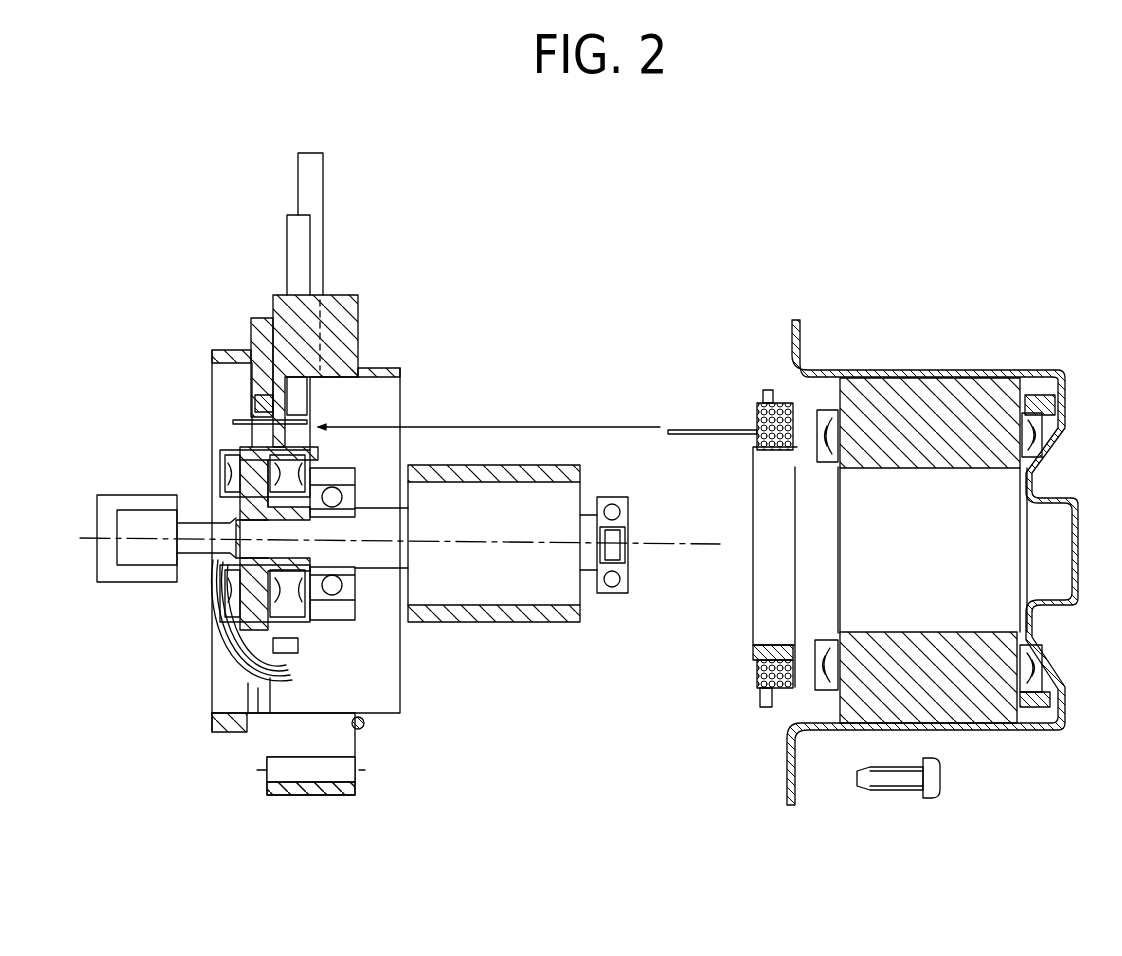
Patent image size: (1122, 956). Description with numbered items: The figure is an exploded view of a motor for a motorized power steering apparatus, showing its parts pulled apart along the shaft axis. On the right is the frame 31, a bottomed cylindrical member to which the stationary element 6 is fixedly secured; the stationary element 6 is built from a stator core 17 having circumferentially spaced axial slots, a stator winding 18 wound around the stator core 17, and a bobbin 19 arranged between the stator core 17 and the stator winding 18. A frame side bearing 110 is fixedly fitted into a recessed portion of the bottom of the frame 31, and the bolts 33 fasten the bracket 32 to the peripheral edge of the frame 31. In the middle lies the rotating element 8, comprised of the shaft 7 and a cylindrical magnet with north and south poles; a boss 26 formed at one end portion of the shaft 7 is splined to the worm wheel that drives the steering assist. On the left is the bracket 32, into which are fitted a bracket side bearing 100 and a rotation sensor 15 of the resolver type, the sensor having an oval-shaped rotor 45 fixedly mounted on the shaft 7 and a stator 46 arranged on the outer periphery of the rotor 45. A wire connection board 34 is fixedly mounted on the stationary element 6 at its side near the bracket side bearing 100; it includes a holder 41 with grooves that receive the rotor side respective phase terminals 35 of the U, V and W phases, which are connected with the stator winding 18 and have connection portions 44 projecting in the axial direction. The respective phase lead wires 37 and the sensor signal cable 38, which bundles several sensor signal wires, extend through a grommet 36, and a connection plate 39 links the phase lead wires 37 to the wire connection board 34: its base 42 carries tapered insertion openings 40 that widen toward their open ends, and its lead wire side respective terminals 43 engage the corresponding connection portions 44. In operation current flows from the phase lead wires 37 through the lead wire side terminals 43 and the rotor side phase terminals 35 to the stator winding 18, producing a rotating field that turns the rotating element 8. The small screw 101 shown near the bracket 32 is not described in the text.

The stationary element 6 is at (962, 698).
The shaft 7 is at (555, 500).
The rotating element 8 is at (518, 472).
The rotation sensor 15 is at (225, 480).
The stator core 17 is at (900, 410).
The stator winding 18 is at (1042, 437).
The bobbin 19 is at (1040, 403).
The boss 26 is at (130, 572).
The frame 31 is at (970, 372).
The bracket 32 is at (262, 317).
The bolts 33 is at (893, 777).
The wire connection board 34 is at (750, 667).
The rotor side respective phase terminals 35 is at (757, 425).
The grommet 36 is at (338, 298).
The respective phase lead wires 37 is at (296, 218).
The sensor signal cable 38 is at (317, 180).
The connection plate 39 is at (360, 316).
The tapered insertion openings 40 is at (322, 425).
The holder 41 is at (753, 655).
The base 42 is at (267, 407).
The lead wire side respective terminals 43 is at (233, 422).
The connection portions 44 is at (685, 430).
The rotor 45 is at (247, 573).
The stator 46 is at (250, 613).
The bracket side bearing 100 is at (357, 600).
The screw 101 is at (370, 727).
The frame side bearing 110 is at (612, 595).